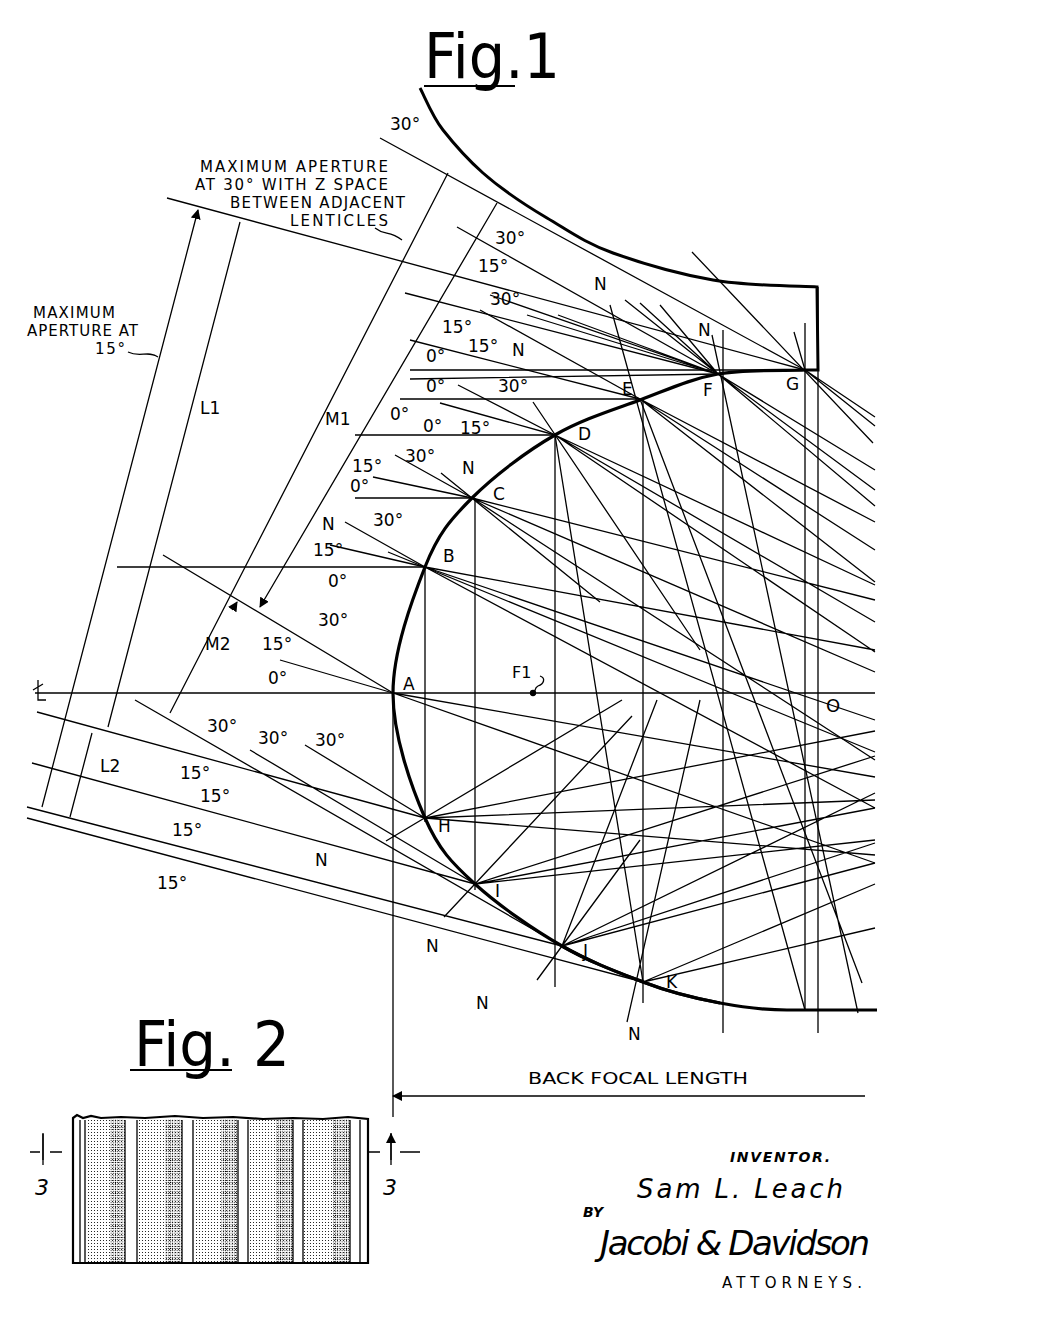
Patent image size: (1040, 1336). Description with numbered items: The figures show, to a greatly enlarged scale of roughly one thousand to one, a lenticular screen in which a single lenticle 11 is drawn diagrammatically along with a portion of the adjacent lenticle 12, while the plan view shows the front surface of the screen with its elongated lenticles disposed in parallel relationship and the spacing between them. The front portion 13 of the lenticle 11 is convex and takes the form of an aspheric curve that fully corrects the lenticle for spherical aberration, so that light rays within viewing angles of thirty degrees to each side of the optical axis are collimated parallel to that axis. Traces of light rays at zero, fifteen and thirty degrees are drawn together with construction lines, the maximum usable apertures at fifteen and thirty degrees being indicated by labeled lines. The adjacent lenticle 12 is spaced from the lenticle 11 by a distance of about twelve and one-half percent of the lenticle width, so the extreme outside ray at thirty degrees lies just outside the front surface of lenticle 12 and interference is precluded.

In FIG. 1, the lenticle 11 is at (787, 1012).
In FIG. 2, the lenticle 11 is at (272, 1264).
In FIG. 1, the adjacent lenticle 12 is at (680, 201).
In FIG. 2, the adjacent lenticle 12 is at (173, 1118).
In FIG. 1, the front portion 13 is at (700, 1002).